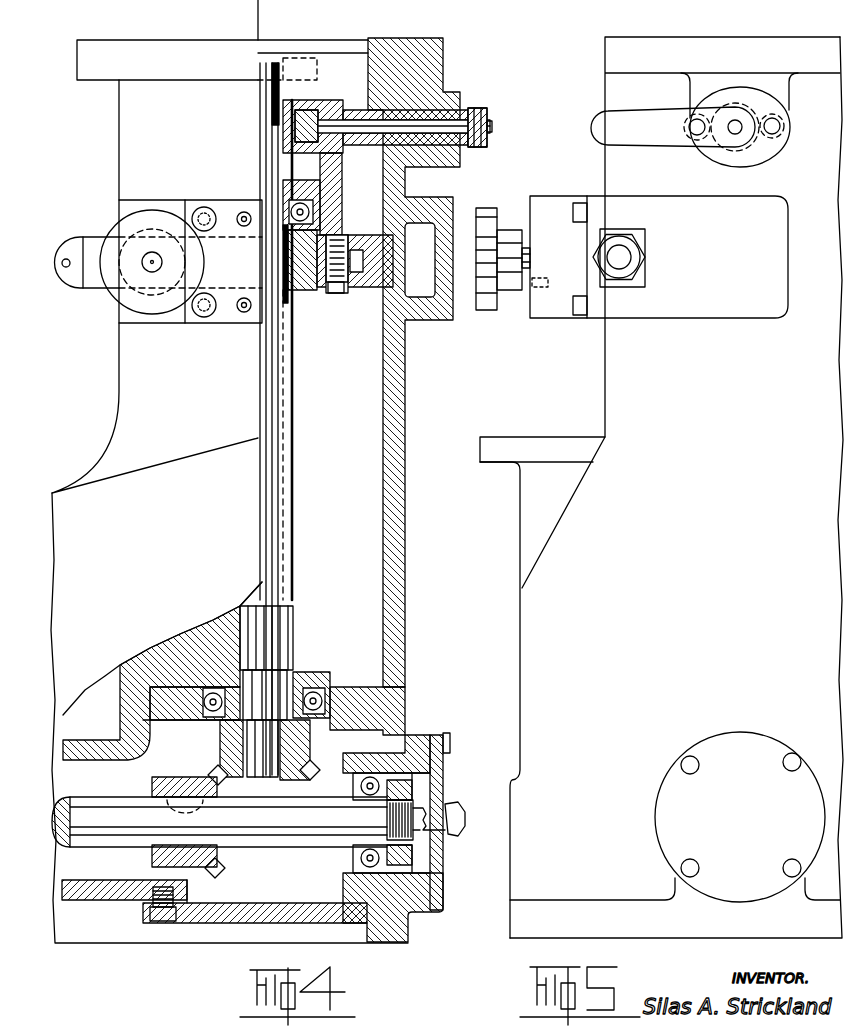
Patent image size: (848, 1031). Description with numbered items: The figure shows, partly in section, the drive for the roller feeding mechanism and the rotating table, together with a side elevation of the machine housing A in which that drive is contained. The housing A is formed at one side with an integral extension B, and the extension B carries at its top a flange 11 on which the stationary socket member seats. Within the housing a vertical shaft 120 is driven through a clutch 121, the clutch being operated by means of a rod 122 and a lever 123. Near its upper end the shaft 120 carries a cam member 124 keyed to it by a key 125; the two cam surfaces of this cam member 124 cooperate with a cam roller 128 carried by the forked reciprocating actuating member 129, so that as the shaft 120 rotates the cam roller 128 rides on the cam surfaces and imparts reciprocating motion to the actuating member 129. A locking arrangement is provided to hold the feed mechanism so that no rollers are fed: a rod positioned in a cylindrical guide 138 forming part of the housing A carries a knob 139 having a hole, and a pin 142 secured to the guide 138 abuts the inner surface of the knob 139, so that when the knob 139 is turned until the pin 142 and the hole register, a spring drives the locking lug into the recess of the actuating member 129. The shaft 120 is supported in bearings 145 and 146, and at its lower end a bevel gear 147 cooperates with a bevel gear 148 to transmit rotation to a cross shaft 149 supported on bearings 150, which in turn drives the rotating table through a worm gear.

In FIG. 5, the flange 11 is at (509, 450).
In FIG. 4, the shaft 120 is at (293, 388).
In FIG. 4, the clutch 121 is at (273, 108).
In FIG. 4, the rod 122 is at (440, 92).
In FIG. 4, the lever 123 is at (470, 118).
In FIG. 5, the lever 123 is at (648, 133).
In FIG. 4, the cam member 124 is at (297, 290).
In FIG. 4, the key 125 is at (288, 258).
In FIG. 4, the cam roller 128 is at (345, 293).
In FIG. 4, the reciprocating actuating member 129 is at (385, 265).
In FIG. 5, the cylindrical guide 138 is at (548, 213).
In FIG. 4, the knob 139 is at (125, 220).
In FIG. 5, the knob 139 is at (506, 230).
In FIG. 5, the pin 142 is at (527, 292).
In FIG. 4, the bearing 145 is at (290, 206).
In FIG. 4, the bearing 146 is at (320, 680).
In FIG. 4, the bevel gear 147 is at (292, 748).
In FIG. 4, the bevel gear 148 is at (178, 783).
In FIG. 4, the cross shaft 149 is at (92, 815).
In FIG. 4, the bearings 150 is at (365, 857).
In FIG. 4, the housing A is at (405, 420).
In FIG. 5, the housing A is at (615, 385).
In FIG. 5, the extension B is at (530, 507).